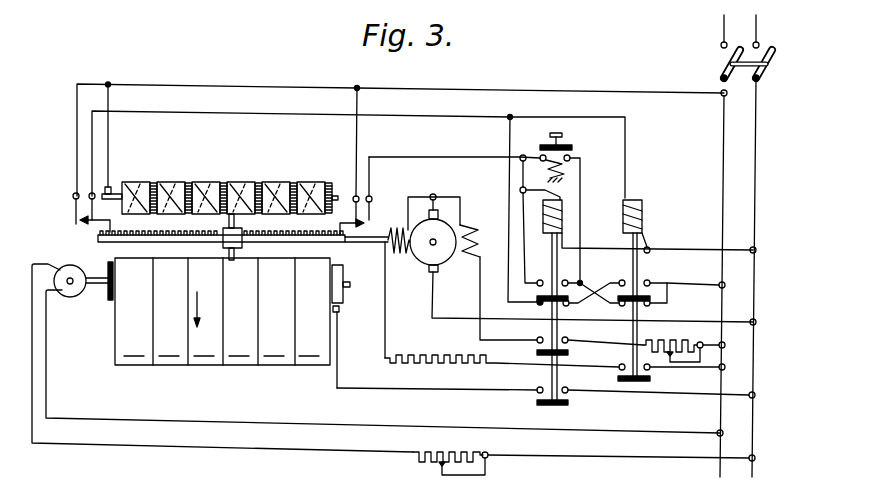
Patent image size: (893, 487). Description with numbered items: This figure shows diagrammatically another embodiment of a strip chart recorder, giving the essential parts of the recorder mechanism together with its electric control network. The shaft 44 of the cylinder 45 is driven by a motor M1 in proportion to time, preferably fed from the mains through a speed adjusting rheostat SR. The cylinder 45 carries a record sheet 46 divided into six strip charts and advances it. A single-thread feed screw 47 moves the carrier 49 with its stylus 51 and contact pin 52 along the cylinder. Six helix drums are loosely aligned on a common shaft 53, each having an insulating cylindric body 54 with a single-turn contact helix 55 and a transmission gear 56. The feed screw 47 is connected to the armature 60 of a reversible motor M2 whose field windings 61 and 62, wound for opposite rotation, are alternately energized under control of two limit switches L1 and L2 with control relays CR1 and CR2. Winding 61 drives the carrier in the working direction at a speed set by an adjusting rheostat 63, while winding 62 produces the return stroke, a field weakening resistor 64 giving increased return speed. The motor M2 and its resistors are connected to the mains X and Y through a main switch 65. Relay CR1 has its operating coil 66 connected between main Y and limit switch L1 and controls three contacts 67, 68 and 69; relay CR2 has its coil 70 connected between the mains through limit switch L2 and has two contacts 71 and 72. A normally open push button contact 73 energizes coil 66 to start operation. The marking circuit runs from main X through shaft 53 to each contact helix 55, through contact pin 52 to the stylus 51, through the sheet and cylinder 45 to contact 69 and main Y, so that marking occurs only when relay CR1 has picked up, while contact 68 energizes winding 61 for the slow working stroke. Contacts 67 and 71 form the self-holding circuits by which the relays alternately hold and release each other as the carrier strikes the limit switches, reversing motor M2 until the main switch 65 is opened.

The shaft 44 is at (101, 292).
The cylinder 45 is at (343, 300).
The record sheet 46 is at (116, 340).
The single-thread feed screw 47 is at (98, 238).
The carrier 49 is at (224, 246).
The stylus 51 is at (235, 254).
The contact pin 52 is at (235, 222).
The common shaft 53 is at (338, 198).
The insulating cylindric body 54 is at (122, 184).
The single-turn contact helix 55 is at (153, 184).
The transmission gear 56 is at (152, 214).
The armature 60 is at (443, 258).
The field winding 61 is at (466, 222).
The field winding 62 is at (388, 258).
The adjusting rheostat 63 is at (662, 345).
The field weakening resistor 64 is at (443, 352).
The main switch 65 is at (726, 63).
The operating coil 66 is at (552, 226).
The contact 67 is at (537, 298).
The contact 68 is at (568, 353).
The contact 69 is at (568, 403).
The coil 70 is at (645, 206).
The contact 71 is at (652, 299).
The contact 72 is at (652, 379).
The push button contact 73 is at (566, 153).
The motor M1 is at (376, 358).
The reversible electric motor M2 is at (423, 286).
The control relay CR1 is at (552, 269).
The control relay CR2 is at (672, 277).
The limit switch L1 is at (370, 208).
The limit switch L2 is at (75, 208).
The speed adjusting rheostat SR is at (396, 458).
The main X is at (719, 414).
The main Y is at (757, 414).